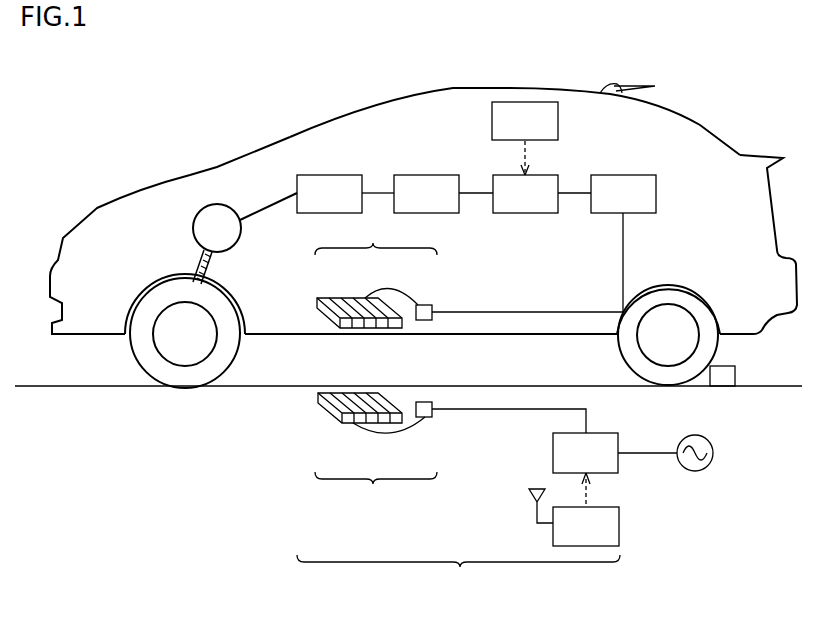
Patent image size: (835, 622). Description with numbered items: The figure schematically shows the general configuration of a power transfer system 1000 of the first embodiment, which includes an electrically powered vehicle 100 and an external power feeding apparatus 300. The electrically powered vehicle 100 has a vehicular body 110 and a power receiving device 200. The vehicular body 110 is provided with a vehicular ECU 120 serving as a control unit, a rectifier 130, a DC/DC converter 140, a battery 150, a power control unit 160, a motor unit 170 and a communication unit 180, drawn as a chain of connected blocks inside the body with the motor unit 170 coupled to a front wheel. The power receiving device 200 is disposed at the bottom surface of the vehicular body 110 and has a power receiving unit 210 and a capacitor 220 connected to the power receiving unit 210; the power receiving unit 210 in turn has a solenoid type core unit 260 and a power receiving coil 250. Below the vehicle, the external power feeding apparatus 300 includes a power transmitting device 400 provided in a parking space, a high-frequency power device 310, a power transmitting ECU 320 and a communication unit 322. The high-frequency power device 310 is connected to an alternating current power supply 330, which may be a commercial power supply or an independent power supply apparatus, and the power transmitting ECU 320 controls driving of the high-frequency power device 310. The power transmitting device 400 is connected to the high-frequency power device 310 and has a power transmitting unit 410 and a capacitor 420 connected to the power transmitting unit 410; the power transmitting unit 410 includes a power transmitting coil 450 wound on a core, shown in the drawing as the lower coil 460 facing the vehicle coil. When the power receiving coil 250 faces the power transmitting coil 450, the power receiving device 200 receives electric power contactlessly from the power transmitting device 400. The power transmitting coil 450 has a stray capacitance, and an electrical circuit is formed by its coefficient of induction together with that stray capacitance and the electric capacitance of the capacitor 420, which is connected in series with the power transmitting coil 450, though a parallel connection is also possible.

The power transfer system 1000 is at (126, 54).
The electrically powered vehicle 100 is at (251, 139).
The vehicular body 110 is at (462, 86).
The vehicular ECU 120 is at (560, 121).
The rectifier 130 is at (636, 175).
The DC/DC converter 140 is at (538, 175).
The battery 150 is at (440, 175).
The power control unit 160 is at (340, 175).
The motor unit 170 is at (226, 204).
The communication unit 180 is at (641, 82).
The power receiving device 200 is at (376, 238).
The power receiving unit 210 is at (348, 297).
The capacitor 220 is at (425, 303).
The power receiving coil 250 is at (342, 310).
The solenoid type core unit 260 is at (318, 303).
The external power feeding apparatus 300 is at (458, 572).
The high-frequency power device 310 is at (602, 433).
The power transmitting ECU 320 is at (602, 507).
The communication unit 322 is at (530, 497).
The alternating current power supply 330 is at (706, 438).
The power transmitting device 400 is at (376, 489).
The power transmitting unit 410 is at (350, 426).
The capacitor 420 is at (425, 418).
The power transmitting coil 450 is at (340, 415).
The coil winding 460 is at (337, 413).